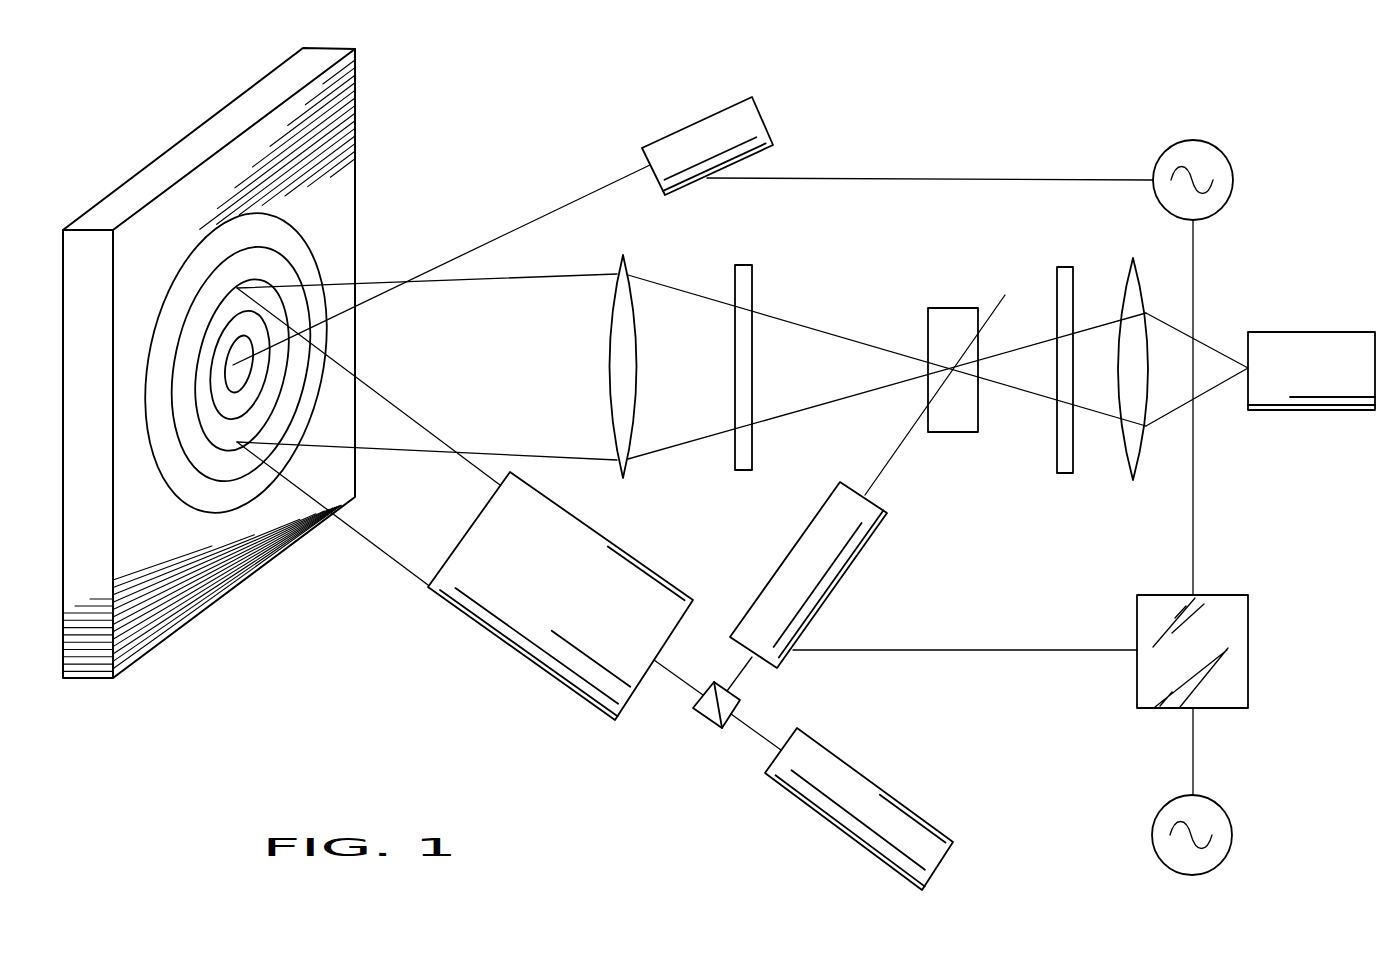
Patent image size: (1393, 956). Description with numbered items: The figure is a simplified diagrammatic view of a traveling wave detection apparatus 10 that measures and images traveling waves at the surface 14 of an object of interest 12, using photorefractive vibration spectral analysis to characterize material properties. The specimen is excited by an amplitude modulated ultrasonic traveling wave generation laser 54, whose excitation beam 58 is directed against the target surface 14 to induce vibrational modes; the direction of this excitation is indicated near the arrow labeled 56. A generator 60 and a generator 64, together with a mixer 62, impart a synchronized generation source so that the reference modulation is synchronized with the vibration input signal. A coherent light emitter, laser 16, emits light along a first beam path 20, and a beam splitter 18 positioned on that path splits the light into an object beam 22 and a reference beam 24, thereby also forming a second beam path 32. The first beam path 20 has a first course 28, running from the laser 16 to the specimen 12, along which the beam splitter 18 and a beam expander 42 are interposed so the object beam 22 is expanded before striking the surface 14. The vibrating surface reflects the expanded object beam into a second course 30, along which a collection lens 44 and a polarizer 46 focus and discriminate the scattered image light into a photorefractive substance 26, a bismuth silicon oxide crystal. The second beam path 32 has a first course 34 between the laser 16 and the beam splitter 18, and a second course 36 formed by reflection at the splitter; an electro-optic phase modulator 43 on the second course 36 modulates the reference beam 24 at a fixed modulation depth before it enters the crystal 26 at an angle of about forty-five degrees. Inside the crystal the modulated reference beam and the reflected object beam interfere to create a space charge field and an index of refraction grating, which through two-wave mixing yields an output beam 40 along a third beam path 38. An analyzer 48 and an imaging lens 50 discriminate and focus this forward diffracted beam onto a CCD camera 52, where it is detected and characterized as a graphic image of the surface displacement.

The traveling wave detection apparatus 10 is at (1076, 102).
The object of interest 12 is at (358, 192).
The surface 14 is at (208, 462).
The laser 16 is at (890, 815).
The beam splitter 18 is at (705, 722).
The first beam path 20 is at (511, 260).
The object beam 22 is at (665, 699).
The reference beam 24 is at (916, 478).
The photorefractive substance 26 is at (948, 308).
The first course 28 is at (690, 681).
The second course 30 is at (558, 277).
The second beam path 32 is at (753, 681).
The first course 34 is at (767, 733).
The second course 36 is at (880, 478).
The third beam path 38 is at (1022, 318).
The output beam 40 is at (1022, 421).
The beam expander 42 is at (518, 612).
The electro-optic phase modulator 43 is at (802, 568).
The collection lens 44 is at (620, 377).
The polarizer 46 is at (743, 265).
The analyzer 48 is at (1068, 267).
The imaging lens 50 is at (1135, 438).
The CCD camera 52 is at (1312, 352).
The ultrasonic traveling wave generation laser 54 is at (705, 138).
The direction arrow 56 is at (526, 206).
The excitation beam 58 is at (573, 199).
The generator 60 is at (1228, 153).
The mixer 62 is at (1250, 646).
The generator 64 is at (1225, 808).